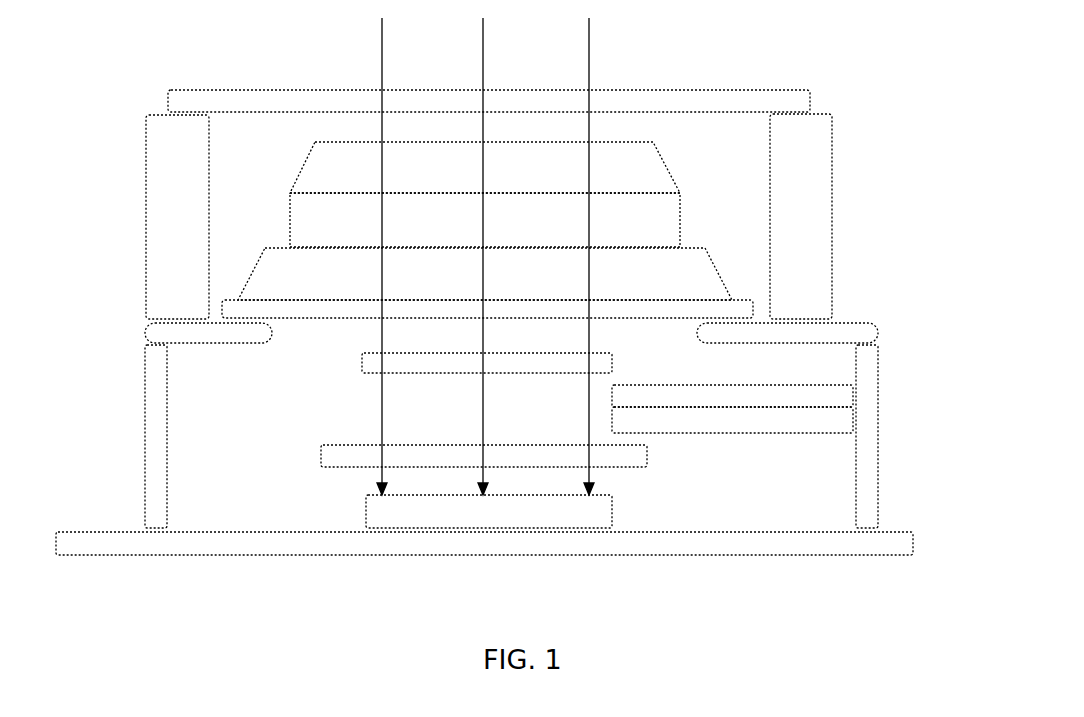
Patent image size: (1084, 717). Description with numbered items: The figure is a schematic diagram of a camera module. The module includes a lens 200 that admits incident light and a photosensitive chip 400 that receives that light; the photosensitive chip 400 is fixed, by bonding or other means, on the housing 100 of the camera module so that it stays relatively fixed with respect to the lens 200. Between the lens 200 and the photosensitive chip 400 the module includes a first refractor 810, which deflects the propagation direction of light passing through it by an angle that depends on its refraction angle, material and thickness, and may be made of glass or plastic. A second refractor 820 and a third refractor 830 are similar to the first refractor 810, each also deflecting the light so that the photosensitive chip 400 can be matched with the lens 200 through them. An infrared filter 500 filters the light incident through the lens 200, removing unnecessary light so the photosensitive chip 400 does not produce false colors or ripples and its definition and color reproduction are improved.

The housing 100 is at (793, 158).
The lens 200 is at (349, 175).
The photosensitive chip 400 is at (526, 510).
The infrared filter 500 is at (606, 455).
The first refractor 810 is at (560, 361).
The second refractor 820 is at (693, 395).
The third refractor 830 is at (697, 422).